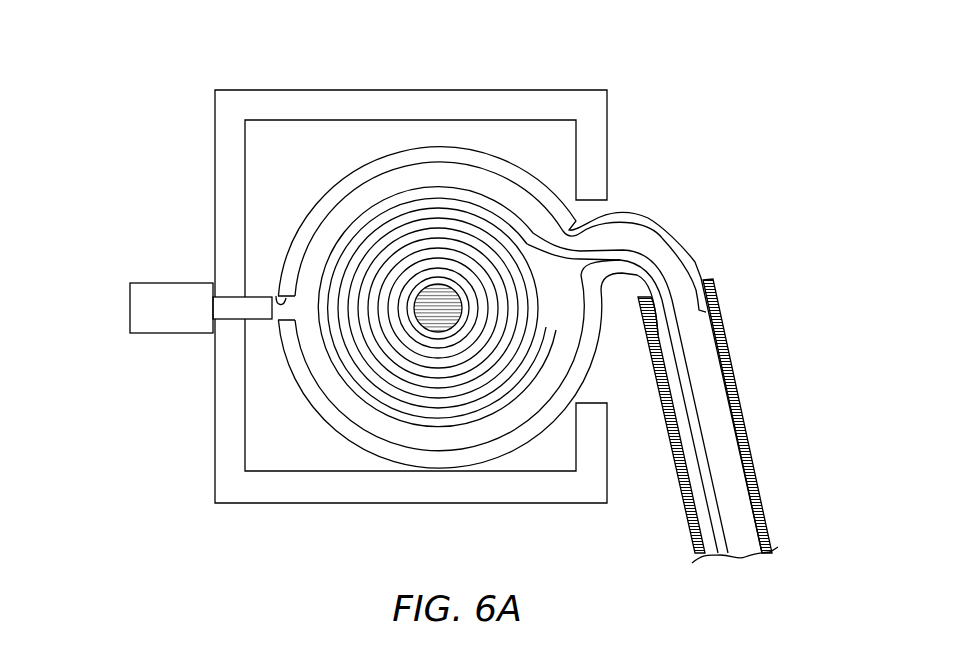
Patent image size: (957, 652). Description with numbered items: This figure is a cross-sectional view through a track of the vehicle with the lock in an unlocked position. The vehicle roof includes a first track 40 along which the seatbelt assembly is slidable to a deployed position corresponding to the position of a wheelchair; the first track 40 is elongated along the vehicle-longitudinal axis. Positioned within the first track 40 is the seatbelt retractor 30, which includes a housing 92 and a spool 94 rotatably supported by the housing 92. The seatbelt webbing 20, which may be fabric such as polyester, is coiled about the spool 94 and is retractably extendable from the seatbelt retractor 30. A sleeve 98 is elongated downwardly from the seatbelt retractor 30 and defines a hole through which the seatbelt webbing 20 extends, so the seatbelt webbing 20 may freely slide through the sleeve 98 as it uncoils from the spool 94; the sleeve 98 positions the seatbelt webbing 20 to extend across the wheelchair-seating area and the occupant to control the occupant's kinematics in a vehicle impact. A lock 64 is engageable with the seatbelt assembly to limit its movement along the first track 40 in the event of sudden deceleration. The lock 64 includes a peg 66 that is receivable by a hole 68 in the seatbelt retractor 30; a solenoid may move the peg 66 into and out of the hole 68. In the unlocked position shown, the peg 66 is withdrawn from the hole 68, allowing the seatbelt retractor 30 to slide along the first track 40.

The seatbelt webbing 20 is at (692, 381).
The seatbelt retractor 30 is at (458, 132).
The first track 40 is at (297, 92).
The lock 64 is at (155, 283).
The peg 66 is at (238, 300).
The hole 68 is at (279, 300).
The housing 92 is at (405, 152).
The spool 94 is at (440, 308).
The sleeve 98 is at (680, 457).